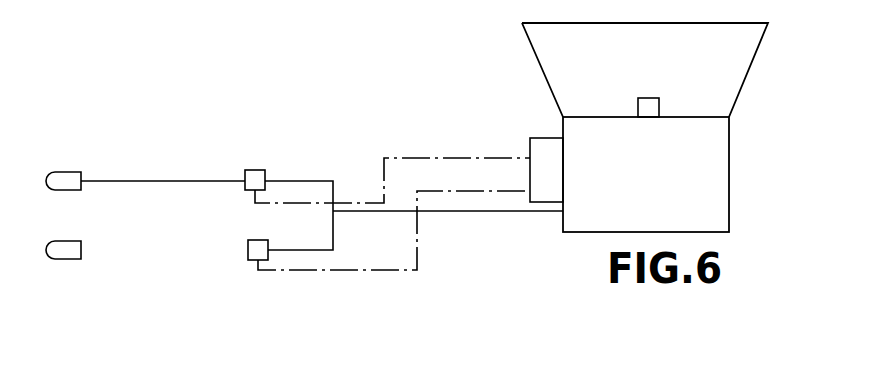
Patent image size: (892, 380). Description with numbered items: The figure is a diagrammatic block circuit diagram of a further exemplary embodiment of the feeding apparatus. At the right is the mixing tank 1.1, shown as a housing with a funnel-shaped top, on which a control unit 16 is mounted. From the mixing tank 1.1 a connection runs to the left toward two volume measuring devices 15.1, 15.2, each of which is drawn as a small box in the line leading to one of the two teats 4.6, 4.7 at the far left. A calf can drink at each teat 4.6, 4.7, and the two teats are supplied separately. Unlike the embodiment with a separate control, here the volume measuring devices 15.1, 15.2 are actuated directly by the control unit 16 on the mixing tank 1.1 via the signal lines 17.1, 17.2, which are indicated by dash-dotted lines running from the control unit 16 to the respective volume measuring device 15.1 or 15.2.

The teat 4.6 is at (48, 176).
The teat 4.7 is at (65, 250).
The volume measuring device 15.1 is at (255, 183).
The volume measuring device 15.2 is at (258, 250).
The signal line 17.1 is at (430, 157).
The signal line 17.2 is at (418, 233).
The control unit 16 is at (540, 157).
The mixing tank 1.1 is at (710, 183).